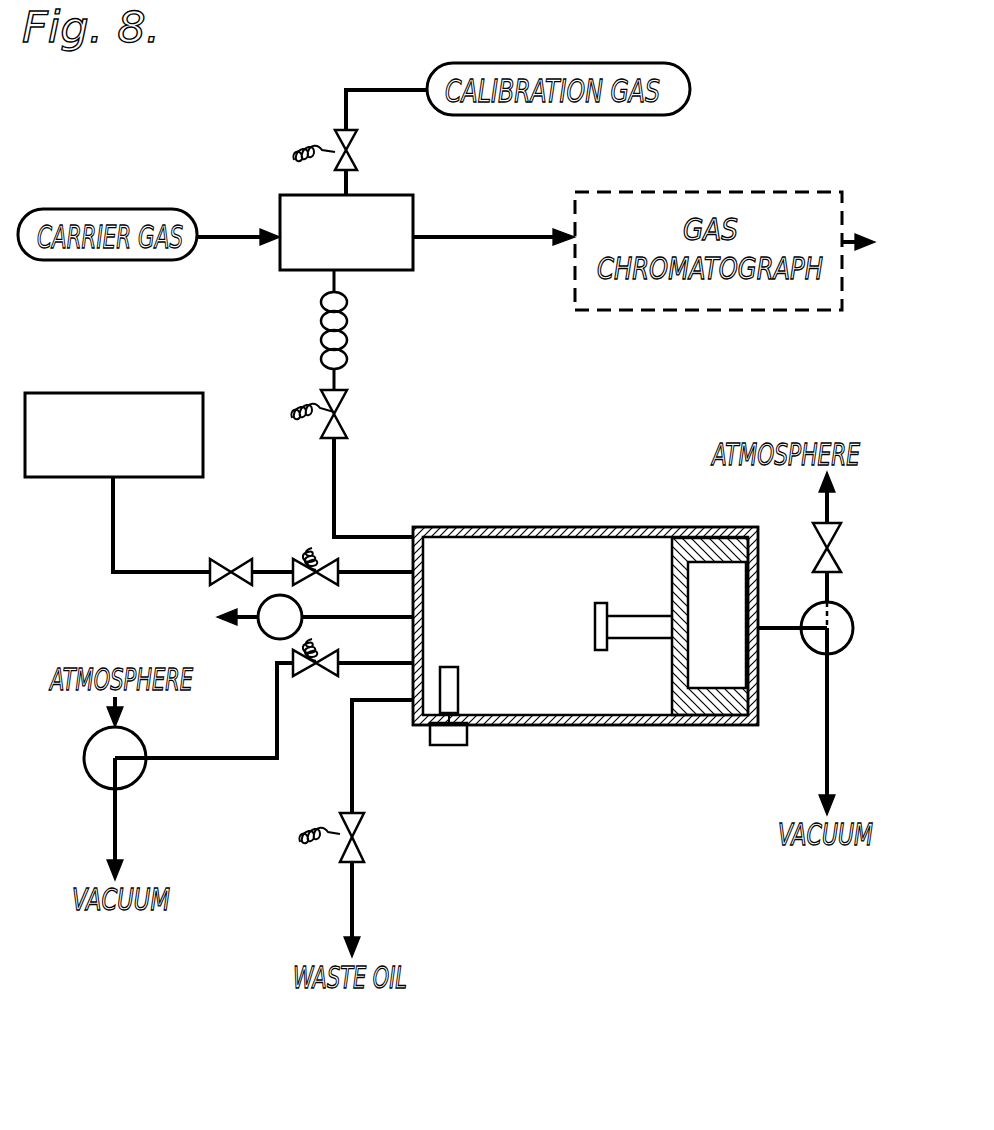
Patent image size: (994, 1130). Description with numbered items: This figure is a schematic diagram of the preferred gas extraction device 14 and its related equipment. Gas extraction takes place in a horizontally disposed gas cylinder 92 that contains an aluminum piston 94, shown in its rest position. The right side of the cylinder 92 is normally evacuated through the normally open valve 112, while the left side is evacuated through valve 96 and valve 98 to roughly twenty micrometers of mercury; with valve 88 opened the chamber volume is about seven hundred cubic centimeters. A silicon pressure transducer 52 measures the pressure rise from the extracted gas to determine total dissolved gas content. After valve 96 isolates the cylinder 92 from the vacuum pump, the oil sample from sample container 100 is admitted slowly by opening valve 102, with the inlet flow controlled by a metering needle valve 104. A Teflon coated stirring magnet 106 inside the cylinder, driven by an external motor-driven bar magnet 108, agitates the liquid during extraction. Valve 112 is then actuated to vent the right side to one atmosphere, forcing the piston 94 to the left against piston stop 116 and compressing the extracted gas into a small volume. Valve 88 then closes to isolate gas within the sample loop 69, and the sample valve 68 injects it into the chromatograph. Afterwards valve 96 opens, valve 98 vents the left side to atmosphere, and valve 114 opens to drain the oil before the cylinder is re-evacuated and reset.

The gas extraction device 14 is at (602, 500).
The silicon pressure transducer 52 is at (270, 637).
The sample valve 68 is at (405, 195).
The sample loop 69 is at (347, 337).
The valve 88 is at (350, 418).
The gas cylinder 92 is at (498, 527).
The aluminum piston 94 is at (718, 704).
The valve 96 is at (316, 678).
The valve 98 is at (138, 781).
The sample container 100 is at (113, 393).
The valve 102 is at (302, 563).
The metering needle valve 104 is at (212, 563).
The stirring magnet 106 is at (458, 673).
The motor-driven bar magnet 108 is at (447, 745).
The valve 112 is at (812, 647).
The valve 114 is at (364, 840).
The piston stop 116 is at (596, 628).